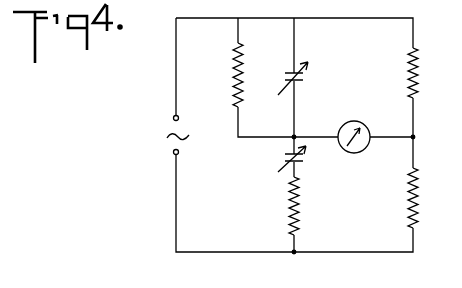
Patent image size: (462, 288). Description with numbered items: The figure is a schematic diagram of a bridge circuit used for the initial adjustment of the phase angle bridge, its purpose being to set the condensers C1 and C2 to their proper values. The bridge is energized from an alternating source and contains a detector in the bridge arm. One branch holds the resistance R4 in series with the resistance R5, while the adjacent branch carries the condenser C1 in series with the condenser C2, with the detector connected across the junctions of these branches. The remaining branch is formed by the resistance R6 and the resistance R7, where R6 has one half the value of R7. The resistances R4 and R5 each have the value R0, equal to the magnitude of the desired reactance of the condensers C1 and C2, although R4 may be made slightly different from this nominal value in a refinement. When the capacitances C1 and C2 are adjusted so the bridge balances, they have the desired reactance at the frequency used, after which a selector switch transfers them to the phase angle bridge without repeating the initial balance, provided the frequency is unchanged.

The resistance R4 is at (247, 75).
The condenser C1 is at (303, 78).
The condenser C2 is at (303, 159).
The resistance R5 is at (308, 206).
The resistance R6 is at (426, 73).
The resistance R7 is at (426, 198).